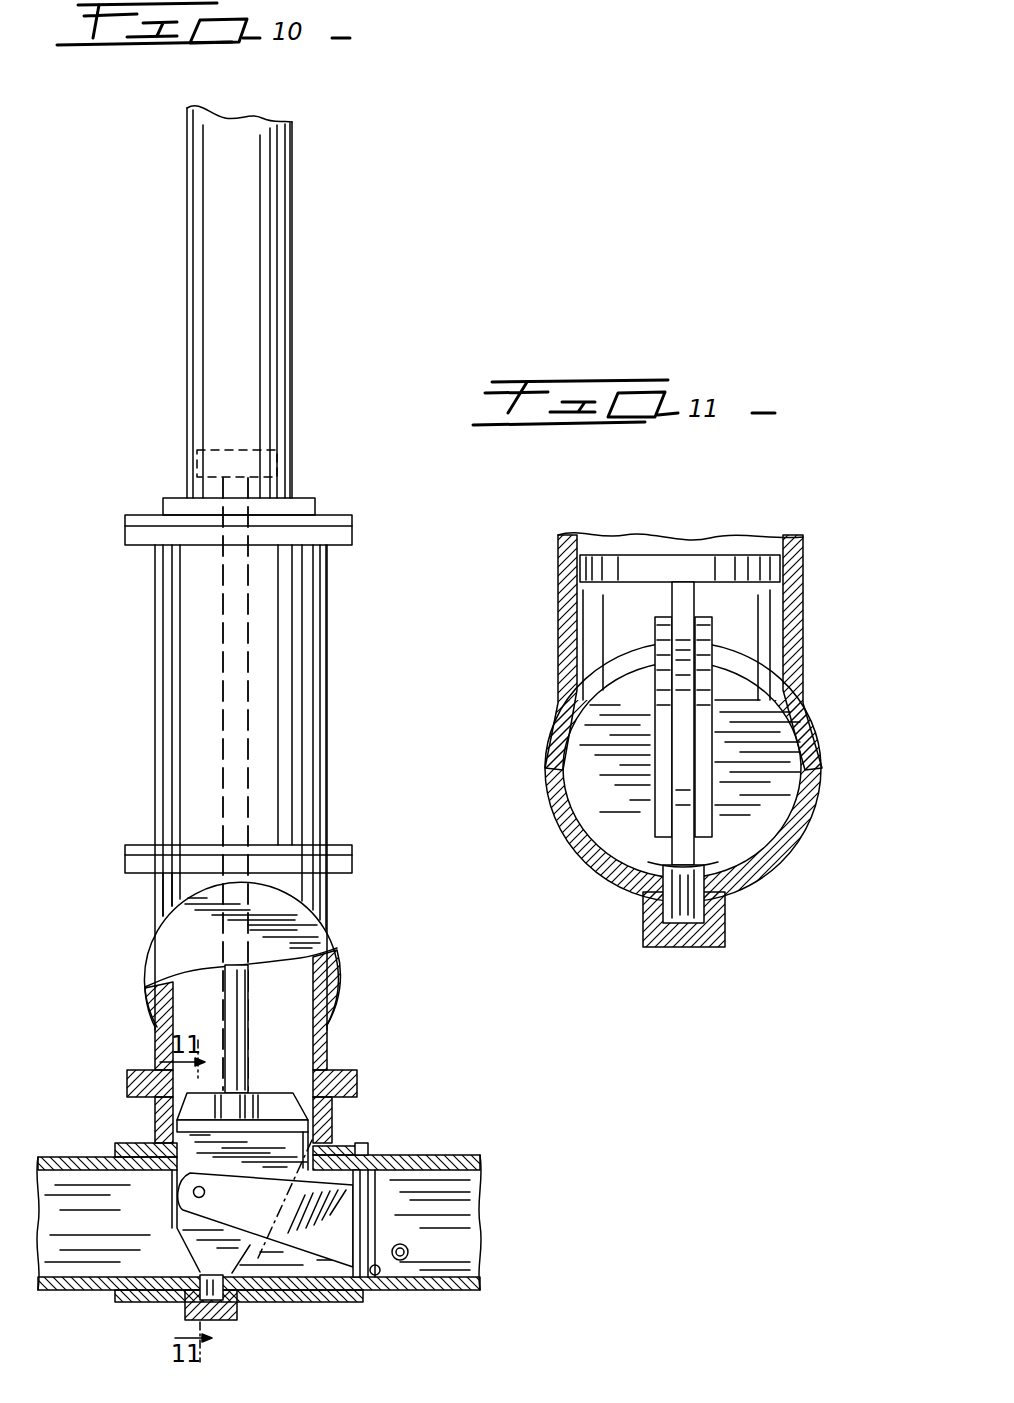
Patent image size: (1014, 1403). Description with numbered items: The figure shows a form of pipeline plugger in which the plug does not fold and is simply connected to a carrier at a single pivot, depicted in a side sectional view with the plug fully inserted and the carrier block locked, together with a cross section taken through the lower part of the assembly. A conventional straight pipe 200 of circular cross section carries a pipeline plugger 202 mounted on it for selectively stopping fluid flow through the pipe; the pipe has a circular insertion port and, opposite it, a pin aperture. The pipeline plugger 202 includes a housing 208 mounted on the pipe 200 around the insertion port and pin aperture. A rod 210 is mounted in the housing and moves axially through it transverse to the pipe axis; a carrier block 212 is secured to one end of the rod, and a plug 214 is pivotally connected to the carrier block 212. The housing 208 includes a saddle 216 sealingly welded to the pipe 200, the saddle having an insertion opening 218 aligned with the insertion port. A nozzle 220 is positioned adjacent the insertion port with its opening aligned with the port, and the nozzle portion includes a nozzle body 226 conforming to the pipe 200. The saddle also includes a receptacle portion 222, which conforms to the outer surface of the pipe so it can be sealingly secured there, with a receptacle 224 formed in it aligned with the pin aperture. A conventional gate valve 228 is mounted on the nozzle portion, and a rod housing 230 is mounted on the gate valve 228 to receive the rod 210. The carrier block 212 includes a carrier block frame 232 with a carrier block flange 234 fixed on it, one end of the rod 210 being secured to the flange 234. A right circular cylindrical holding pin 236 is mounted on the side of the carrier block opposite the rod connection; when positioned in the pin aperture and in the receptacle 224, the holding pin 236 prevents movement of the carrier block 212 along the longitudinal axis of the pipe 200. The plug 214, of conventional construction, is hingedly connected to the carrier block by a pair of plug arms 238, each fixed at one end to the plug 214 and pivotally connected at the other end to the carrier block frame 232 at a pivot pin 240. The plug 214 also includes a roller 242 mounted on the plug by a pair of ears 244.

In FIG. 11, the pipe 200 is at (802, 803).
In FIG. 10, the pipeline plugger 202 is at (157, 752).
In FIG. 10, the housing 208 is at (328, 525).
In FIG. 10, the rod 210 is at (245, 1005).
In FIG. 10, the carrier block 212 is at (172, 1212).
In FIG. 10, the plug 214 is at (385, 1225).
In FIG. 11, the plug 214 is at (793, 735).
In FIG. 10, the saddle 216 is at (120, 1150).
In FIG. 10, the insertion opening 218 is at (177, 1166).
In FIG. 10, the nozzle 220 is at (317, 1118).
In FIG. 11, the nozzle 220 is at (565, 582).
In FIG. 10, the receptacle portion 222 is at (365, 1292).
In FIG. 11, the receptacle portion 222 is at (582, 862).
In FIG. 10, the receptacle 224 is at (222, 1315).
In FIG. 11, the receptacle 224 is at (718, 913).
In FIG. 10, the nozzle body 226 is at (368, 1150).
In FIG. 11, the nozzle body 226 is at (577, 690).
In FIG. 10, the gate valve 228 is at (145, 960).
In FIG. 10, the rod housing 230 is at (158, 778).
In FIG. 10, the carrier block frame 232 is at (287, 1155).
In FIG. 11, the carrier block frame 232 is at (688, 600).
In FIG. 10, the carrier block flange 234 is at (287, 1127).
In FIG. 11, the carrier block flange 234 is at (748, 563).
In FIG. 10, the holding pin 236 is at (198, 1290).
In FIG. 11, the holding pin 236 is at (672, 884).
In FIG. 10, the plug arms 238 is at (306, 1212).
In FIG. 11, the plug arms 238 is at (700, 770).
In FIG. 10, the pivot pin 240 is at (193, 1192).
In FIG. 10, the roller 242 is at (408, 1252).
In FIG. 10, the ears 244 is at (380, 1272).